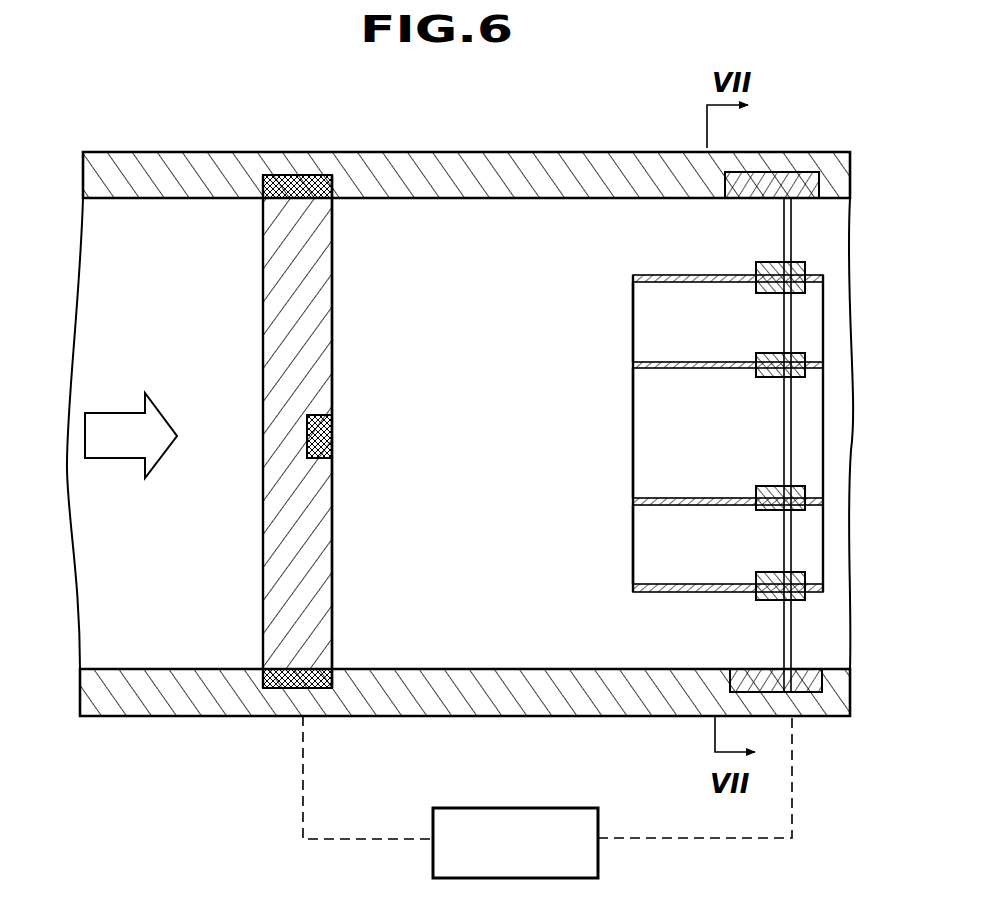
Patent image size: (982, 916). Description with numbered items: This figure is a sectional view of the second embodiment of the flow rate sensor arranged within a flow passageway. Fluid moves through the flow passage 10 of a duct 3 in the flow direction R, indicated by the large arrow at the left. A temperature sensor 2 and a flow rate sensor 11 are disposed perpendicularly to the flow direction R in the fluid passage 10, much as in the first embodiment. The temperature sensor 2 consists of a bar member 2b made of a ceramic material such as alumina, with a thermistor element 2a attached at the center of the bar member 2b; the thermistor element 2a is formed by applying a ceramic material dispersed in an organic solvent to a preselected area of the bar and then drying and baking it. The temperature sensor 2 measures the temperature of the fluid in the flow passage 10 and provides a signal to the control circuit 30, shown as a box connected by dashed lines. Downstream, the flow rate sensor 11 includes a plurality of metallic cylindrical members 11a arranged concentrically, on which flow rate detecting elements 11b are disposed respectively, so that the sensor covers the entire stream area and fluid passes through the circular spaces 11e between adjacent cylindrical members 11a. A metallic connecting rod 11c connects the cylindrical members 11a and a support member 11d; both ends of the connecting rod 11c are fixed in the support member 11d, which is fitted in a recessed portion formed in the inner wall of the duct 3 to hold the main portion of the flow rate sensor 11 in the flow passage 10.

The duct 3 is at (463, 175).
The flow passage 10 is at (233, 434).
The flow direction R is at (92, 433).
The temperature sensor 2 is at (337, 383).
The thermistor element 2a is at (333, 442).
The bar member 2b is at (333, 263).
The flow rate sensor 11 is at (828, 396).
The metallic cylindrical members 11a is at (672, 273).
The flow rate detecting elements 11b is at (767, 376).
The connecting rod 11c is at (792, 233).
The support member 11d is at (772, 178).
The circular spaces 11e is at (706, 332).
The control circuit 30 is at (558, 810).